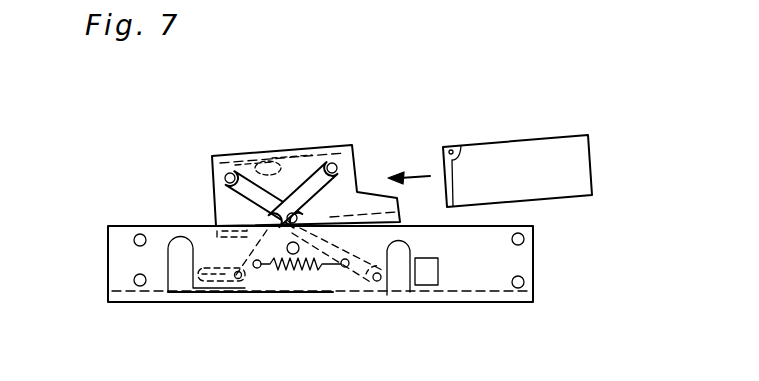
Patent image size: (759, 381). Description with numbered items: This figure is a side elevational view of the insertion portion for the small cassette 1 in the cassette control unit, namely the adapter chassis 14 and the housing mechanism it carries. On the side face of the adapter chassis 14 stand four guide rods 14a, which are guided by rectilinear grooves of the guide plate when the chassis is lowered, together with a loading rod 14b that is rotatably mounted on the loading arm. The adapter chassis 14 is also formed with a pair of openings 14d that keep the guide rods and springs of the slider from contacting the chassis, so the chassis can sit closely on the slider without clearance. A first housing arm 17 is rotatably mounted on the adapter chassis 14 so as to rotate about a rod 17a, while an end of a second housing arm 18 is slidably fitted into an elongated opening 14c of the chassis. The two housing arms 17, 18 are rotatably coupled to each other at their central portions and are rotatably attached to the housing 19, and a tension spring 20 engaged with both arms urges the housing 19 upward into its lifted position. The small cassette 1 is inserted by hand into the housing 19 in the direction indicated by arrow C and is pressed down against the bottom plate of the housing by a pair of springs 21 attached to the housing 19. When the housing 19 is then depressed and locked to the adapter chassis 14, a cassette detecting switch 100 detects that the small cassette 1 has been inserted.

The small cassette 1 is at (533, 157).
The cassette insertion direction C is at (422, 170).
The adapter chassis 14 is at (465, 266).
The guide rods 14a is at (133, 241).
The loading rod 14b is at (291, 256).
The elongated opening 14c is at (214, 290).
The openings 14d is at (177, 257).
The first housing arm 17 is at (243, 191).
The rod 17a is at (386, 270).
The second housing arm 18 is at (318, 186).
The housing 19 is at (347, 206).
The tension spring 20 is at (305, 272).
The springs 21 is at (269, 154).
The cassette detecting switch 100 is at (422, 277).